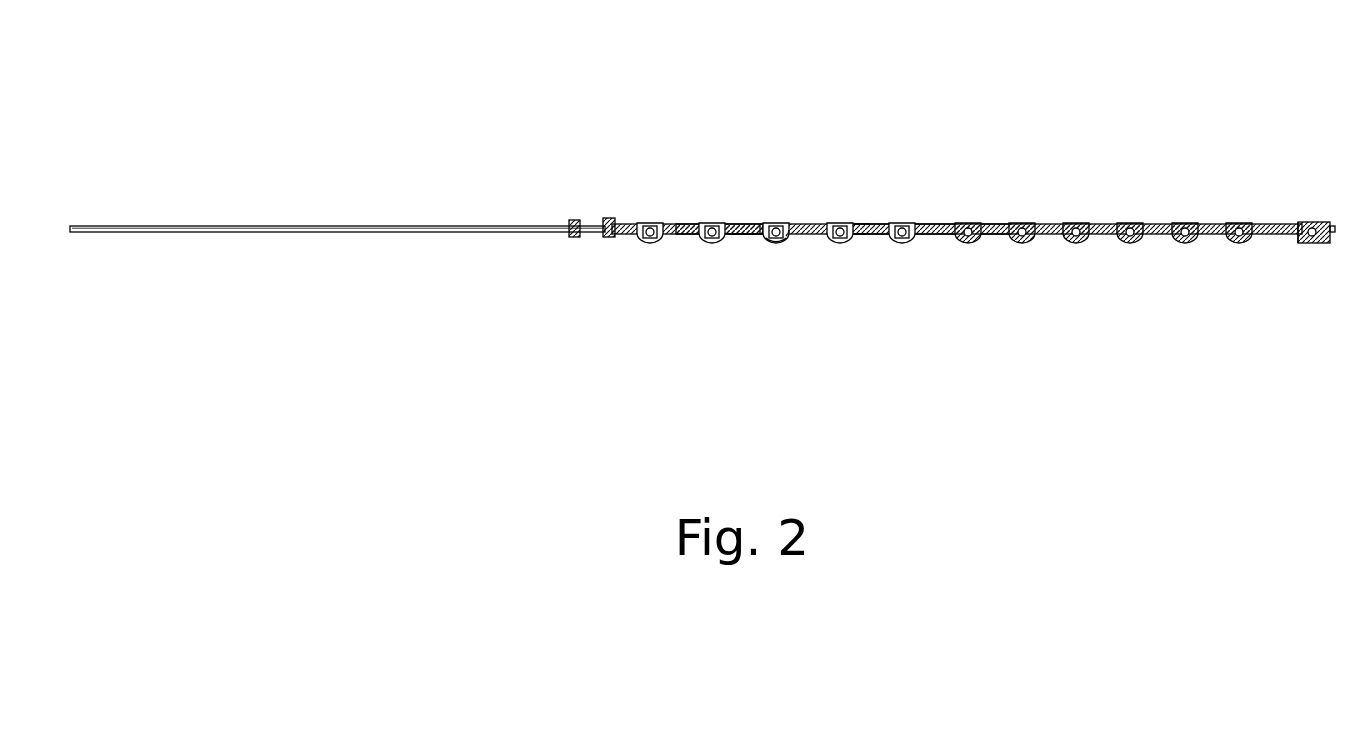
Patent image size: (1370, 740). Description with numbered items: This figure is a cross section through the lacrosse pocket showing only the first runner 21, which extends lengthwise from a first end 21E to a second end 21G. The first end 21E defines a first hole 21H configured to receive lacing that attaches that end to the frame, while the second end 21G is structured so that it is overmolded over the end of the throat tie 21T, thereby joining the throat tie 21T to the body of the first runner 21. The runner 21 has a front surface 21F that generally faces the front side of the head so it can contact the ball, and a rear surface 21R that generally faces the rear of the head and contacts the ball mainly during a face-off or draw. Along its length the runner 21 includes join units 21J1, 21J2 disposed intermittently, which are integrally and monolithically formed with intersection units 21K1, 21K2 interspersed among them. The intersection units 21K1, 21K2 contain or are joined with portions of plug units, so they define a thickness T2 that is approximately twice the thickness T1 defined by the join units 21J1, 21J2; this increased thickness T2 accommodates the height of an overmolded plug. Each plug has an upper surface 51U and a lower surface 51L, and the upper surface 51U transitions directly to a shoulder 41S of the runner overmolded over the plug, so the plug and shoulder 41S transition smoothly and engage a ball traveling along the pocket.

The first runner 21 is at (962, 196).
The throat tie 21T is at (380, 233).
The second end 21G is at (602, 243).
The front surface 21F is at (746, 208).
The rear surface 21R is at (743, 262).
The lower surface 51L is at (779, 222).
The upper surface 51U is at (779, 245).
The shoulder 41S is at (796, 244).
The thickness T1 is at (862, 262).
The thickness T2 is at (980, 241).
The intersection unit 21K1 is at (882, 197).
The intersection unit 21K2 is at (994, 222).
The join unit 21J1 is at (892, 268).
The join unit 21J2 is at (920, 268).
The first end 21E is at (1292, 258).
The first hole 21H is at (1318, 244).